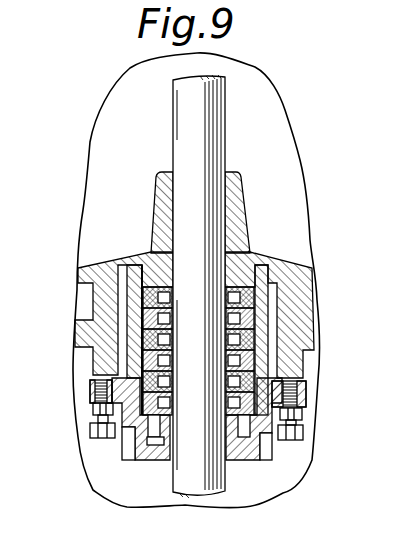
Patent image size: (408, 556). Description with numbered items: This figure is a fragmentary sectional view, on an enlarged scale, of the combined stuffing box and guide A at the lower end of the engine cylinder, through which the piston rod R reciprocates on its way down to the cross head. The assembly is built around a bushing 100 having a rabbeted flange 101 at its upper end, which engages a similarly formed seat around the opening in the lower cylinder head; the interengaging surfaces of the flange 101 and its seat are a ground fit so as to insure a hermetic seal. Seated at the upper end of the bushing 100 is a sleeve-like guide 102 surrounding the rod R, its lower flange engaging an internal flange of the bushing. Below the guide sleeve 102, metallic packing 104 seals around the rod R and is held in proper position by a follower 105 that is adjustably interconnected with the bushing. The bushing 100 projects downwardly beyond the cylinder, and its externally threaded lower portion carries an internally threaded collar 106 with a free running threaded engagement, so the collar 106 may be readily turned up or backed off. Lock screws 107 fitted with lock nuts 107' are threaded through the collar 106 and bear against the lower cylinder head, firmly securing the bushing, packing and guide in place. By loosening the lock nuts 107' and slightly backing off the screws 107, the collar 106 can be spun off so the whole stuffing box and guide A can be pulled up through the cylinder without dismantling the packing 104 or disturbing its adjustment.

The piston rod R is at (170, 129).
The combined stuffing box and guide A is at (256, 249).
The bushing 100 is at (268, 330).
The rabbeted flange 101 is at (280, 256).
The sleeve-like guide 102 is at (155, 206).
The metallic packing 104 is at (238, 453).
The follower 105 is at (151, 452).
The internally threaded collar 106 is at (308, 394).
The lock screws 107 is at (197, 435).
The lock nuts 107' is at (196, 414).